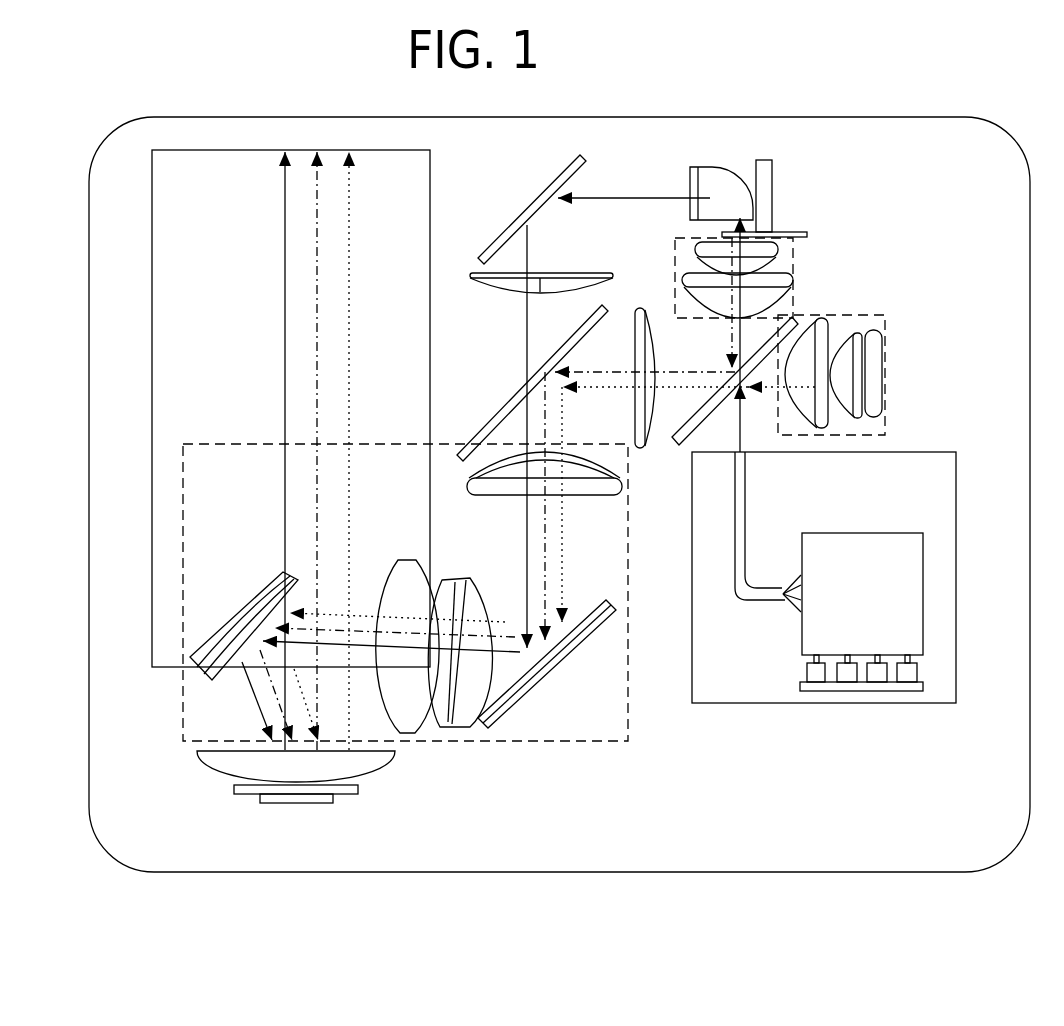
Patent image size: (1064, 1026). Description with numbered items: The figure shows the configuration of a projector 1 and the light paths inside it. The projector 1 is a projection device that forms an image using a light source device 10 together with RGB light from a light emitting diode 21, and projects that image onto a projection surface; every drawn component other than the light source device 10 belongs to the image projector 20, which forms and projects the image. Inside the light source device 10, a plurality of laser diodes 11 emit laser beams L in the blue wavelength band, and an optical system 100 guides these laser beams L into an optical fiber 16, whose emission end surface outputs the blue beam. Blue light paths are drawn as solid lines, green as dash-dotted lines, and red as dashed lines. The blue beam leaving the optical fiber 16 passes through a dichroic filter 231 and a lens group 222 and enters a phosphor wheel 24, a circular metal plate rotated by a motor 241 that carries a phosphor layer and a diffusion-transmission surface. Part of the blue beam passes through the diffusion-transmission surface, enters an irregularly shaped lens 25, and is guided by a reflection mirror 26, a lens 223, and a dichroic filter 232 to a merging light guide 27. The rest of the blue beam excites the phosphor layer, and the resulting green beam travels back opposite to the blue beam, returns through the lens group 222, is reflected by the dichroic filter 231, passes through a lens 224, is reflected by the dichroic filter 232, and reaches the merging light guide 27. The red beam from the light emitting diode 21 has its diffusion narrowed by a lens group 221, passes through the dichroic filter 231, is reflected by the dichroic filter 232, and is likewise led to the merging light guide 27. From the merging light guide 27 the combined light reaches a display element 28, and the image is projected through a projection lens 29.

The projector 1 is at (559, 450).
The image projector 20 is at (857, 90).
The projection lens 29 is at (152, 347).
The merging light guide 27 is at (563, 742).
The display element 28 is at (357, 787).
The reflection mirror 26 is at (548, 183).
The lens 223 is at (503, 292).
The irregularly shaped lens 25 is at (712, 178).
The motor 241 is at (767, 183).
The phosphor wheel 24 is at (783, 232).
The lens group 222 is at (795, 263).
The laser beam L is at (742, 410).
The dichroic filter 231 is at (673, 447).
The lens group 221 is at (873, 347).
The light emitting diode 21 is at (885, 352).
The dichroic filter 232 is at (500, 410).
The lens 224 is at (635, 440).
The light source device 10 is at (839, 611).
The optical fiber 16 is at (737, 463).
The optical system 100 is at (925, 600).
The laser diodes 11 is at (817, 682).